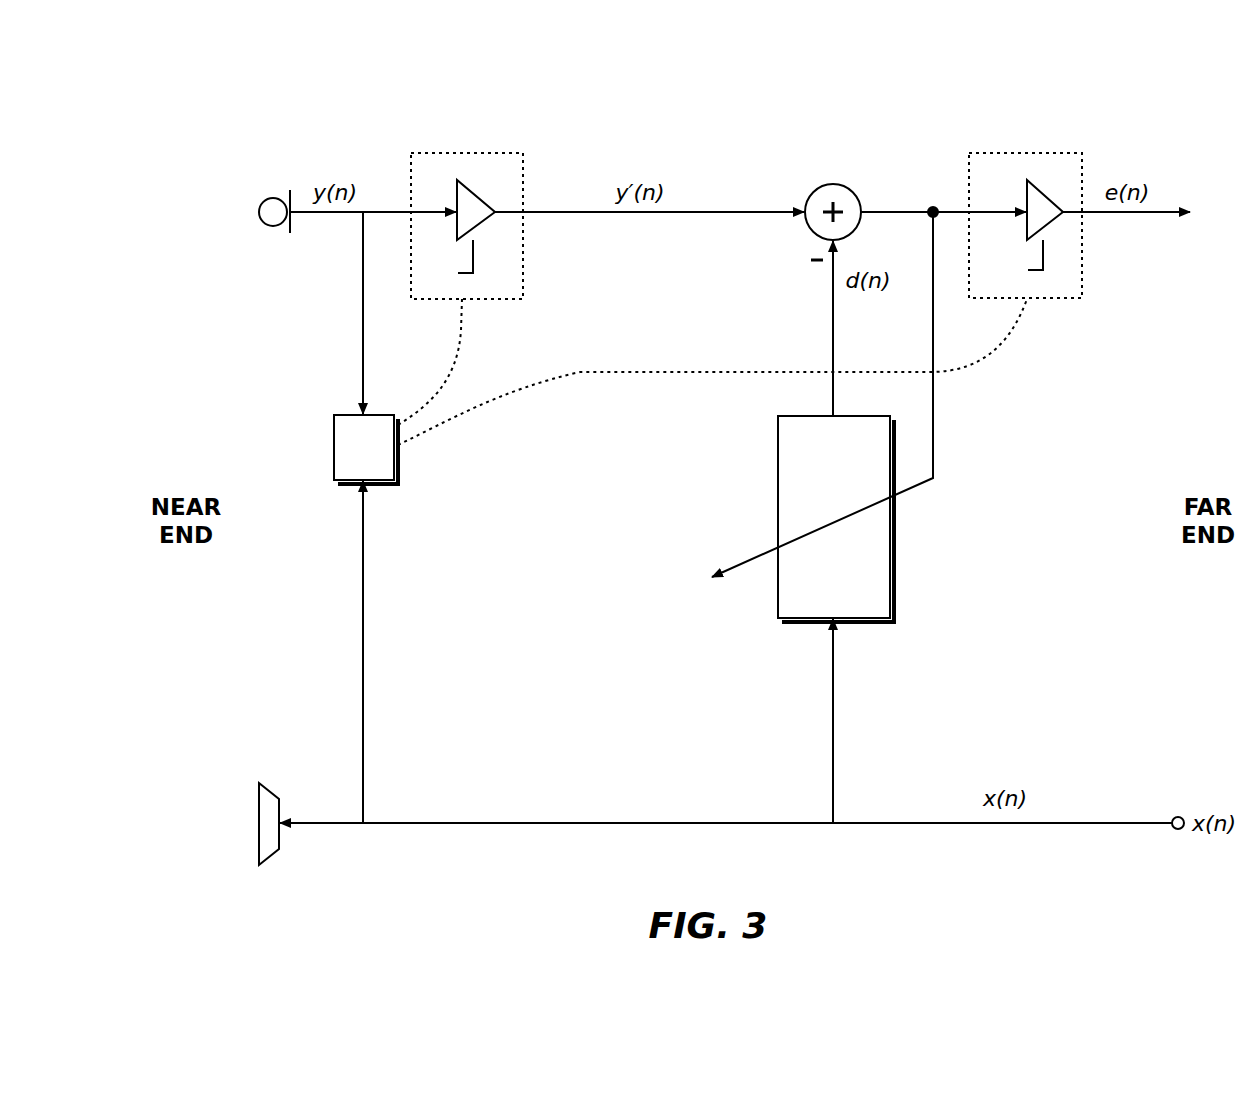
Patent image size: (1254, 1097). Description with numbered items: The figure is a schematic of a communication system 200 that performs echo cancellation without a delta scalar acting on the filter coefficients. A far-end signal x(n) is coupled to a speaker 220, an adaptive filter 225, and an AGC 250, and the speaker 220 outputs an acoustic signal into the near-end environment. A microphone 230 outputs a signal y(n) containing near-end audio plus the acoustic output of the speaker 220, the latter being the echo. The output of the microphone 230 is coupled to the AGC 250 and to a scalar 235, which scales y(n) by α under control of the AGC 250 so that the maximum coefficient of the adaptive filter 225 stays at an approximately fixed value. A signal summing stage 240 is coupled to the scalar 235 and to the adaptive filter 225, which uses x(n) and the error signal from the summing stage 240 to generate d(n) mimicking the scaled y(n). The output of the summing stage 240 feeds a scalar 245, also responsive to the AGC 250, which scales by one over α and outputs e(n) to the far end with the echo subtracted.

The communication system 200 is at (1137, 92).
The speaker 220 is at (272, 855).
The adaptive filter 225 is at (893, 568).
The microphone 230 is at (276, 198).
The scalar 235 is at (475, 190).
The signal summing stage 240 is at (838, 185).
The scalar 245 is at (1043, 187).
The AGC 250 is at (383, 487).